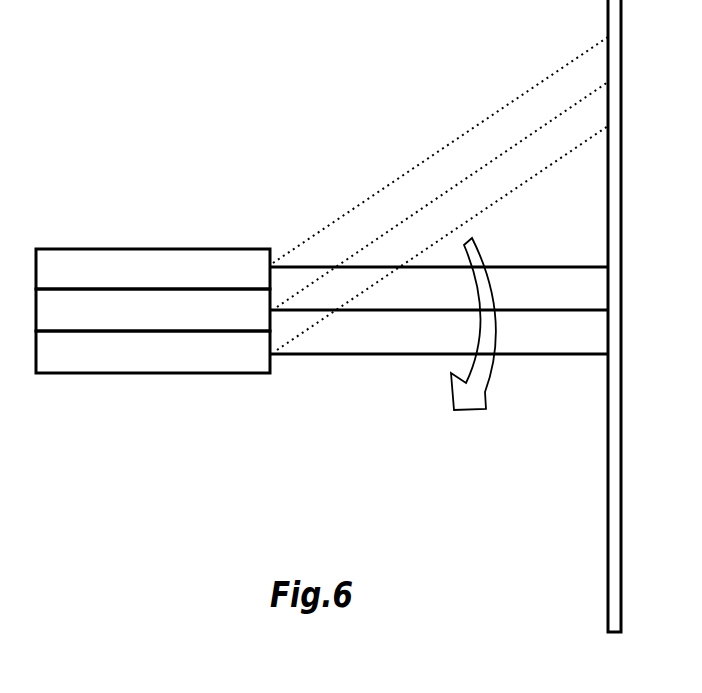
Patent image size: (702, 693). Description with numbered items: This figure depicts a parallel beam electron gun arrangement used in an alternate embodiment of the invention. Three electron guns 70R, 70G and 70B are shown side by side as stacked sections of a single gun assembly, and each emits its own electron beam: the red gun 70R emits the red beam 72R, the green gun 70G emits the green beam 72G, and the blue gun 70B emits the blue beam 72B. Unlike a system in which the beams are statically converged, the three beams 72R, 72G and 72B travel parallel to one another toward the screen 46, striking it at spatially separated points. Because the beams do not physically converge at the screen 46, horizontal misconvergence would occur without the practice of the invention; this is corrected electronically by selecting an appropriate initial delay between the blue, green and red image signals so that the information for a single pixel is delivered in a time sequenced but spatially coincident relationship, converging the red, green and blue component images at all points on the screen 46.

The red electron gun 70R is at (51, 260).
The green electron gun 70G is at (127, 308).
The blue electron gun 70B is at (213, 353).
The red beam 72R is at (525, 267).
The green beam 72G is at (525, 310).
The blue beam 72B is at (525, 354).
The screen 46 is at (608, 463).